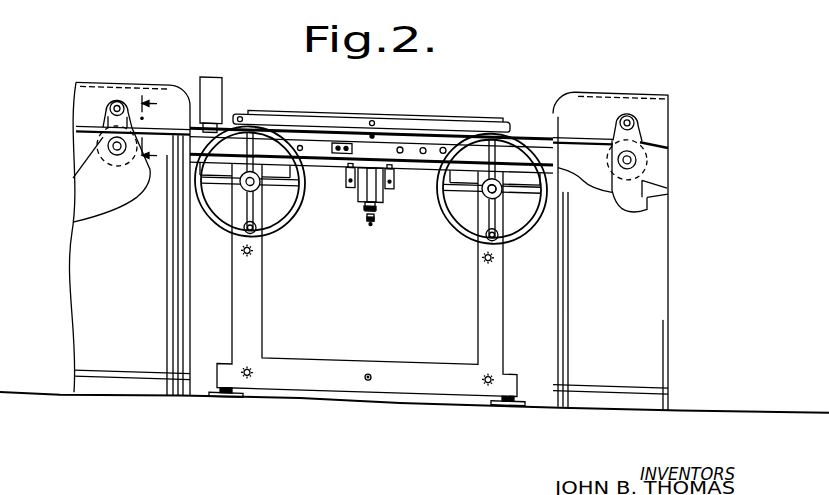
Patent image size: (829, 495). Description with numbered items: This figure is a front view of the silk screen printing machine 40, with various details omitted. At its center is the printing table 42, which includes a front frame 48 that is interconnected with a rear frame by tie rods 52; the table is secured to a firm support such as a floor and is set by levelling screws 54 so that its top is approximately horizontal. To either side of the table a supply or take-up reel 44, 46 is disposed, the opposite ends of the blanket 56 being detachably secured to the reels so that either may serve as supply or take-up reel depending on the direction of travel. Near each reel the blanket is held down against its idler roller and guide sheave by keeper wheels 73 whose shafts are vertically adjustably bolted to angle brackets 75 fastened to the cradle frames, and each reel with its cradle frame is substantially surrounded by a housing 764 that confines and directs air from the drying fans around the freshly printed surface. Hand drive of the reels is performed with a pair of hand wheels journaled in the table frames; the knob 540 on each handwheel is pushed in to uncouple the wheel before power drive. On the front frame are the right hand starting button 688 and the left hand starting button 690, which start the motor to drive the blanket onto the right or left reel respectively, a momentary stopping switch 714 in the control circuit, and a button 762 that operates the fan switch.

The silk screen printing machine 40 is at (406, 230).
The printing table 42 is at (388, 399).
The supply or take-up reel 44 is at (147, 260).
The supply or take-up reel 46 is at (610, 279).
The front frame 48 is at (493, 318).
The tie rods 52 is at (491, 250).
The levelling screws 54 is at (522, 385).
The blanket 56 is at (187, 87).
The keeper wheels 73 is at (113, 97).
The angle brackets 75 is at (128, 106).
The knob 540 is at (492, 174).
The right hand starting button 688 is at (400, 134).
The left hand starting button 690 is at (423, 142).
The momentary stopping switch 714 is at (443, 133).
The button 762 is at (302, 137).
The housing 764 is at (170, 323).